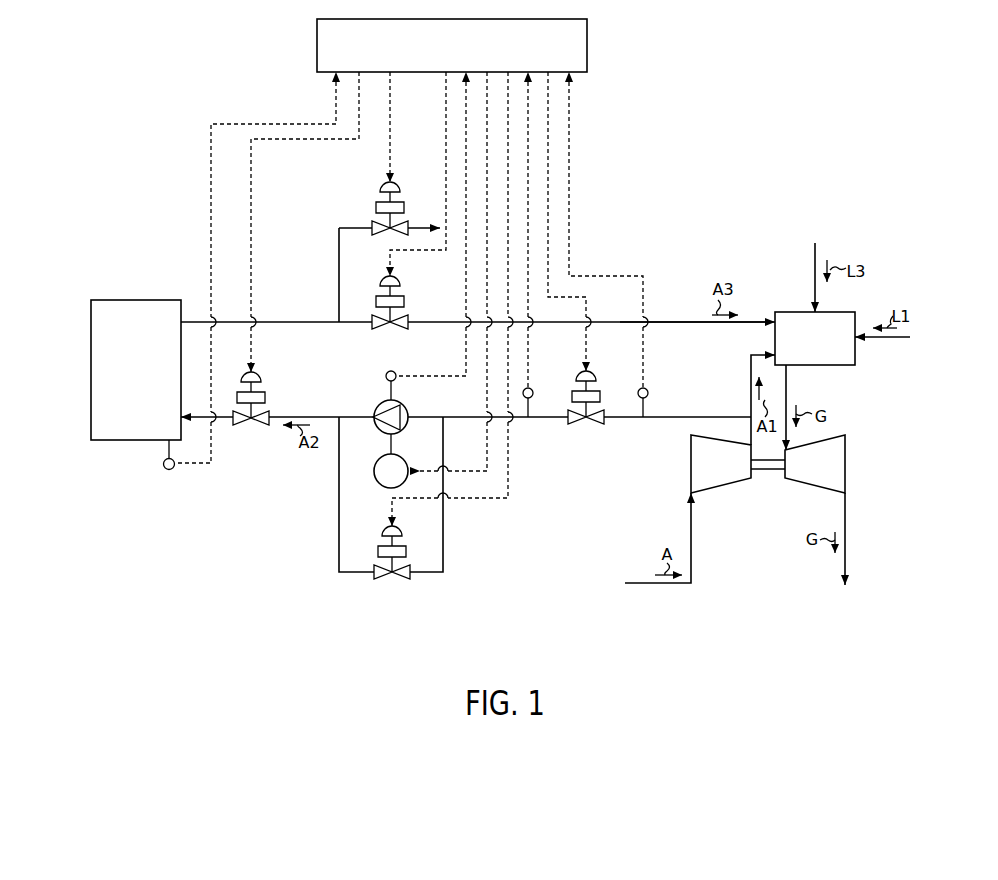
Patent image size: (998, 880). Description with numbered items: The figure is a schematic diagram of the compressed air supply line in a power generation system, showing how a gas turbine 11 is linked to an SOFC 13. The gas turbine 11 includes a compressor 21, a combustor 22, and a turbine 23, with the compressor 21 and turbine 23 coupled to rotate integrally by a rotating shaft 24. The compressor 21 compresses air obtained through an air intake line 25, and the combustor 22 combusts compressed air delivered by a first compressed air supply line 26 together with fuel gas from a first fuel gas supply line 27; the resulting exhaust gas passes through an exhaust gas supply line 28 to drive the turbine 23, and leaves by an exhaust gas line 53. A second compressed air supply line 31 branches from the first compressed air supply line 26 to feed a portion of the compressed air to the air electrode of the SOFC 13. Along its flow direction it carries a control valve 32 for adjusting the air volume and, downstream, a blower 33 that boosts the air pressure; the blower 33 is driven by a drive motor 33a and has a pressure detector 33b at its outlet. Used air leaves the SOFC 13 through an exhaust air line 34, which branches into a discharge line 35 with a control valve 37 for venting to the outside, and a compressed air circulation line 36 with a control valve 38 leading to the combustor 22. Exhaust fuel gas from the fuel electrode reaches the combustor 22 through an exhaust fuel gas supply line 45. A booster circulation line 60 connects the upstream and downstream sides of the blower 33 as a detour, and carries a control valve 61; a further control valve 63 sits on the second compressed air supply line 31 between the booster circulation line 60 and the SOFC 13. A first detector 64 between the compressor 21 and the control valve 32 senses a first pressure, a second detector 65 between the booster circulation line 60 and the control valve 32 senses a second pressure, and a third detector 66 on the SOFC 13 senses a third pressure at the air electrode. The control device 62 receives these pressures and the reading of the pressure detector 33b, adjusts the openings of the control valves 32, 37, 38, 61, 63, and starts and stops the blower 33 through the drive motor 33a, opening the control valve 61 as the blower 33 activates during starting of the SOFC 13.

The gas turbine 11 is at (772, 479).
The SOFC 13 is at (143, 300).
The compressor 21 is at (691, 480).
The combustor 22 is at (831, 312).
The turbine 23 is at (812, 488).
The rotating shaft 24 is at (768, 470).
The air intake line 25 is at (691, 565).
The first compressed air supply line 26 is at (751, 385).
The first fuel gas supply line 27 is at (880, 340).
The exhaust gas supply line 28 is at (786, 387).
The second compressed air supply line 31 is at (616, 420).
The control valve 32 is at (594, 375).
The blower 33 is at (379, 404).
The drive motor 33a is at (399, 455).
The pressure detector 33b is at (396, 372).
The exhaust air line 34 is at (296, 322).
The discharge line 35 is at (350, 228).
The compressed air circulation line 36 is at (668, 322).
The control valve 37 is at (398, 187).
The control valve 38 is at (398, 283).
The exhaust fuel gas supply line 45 is at (815, 262).
The exhaust gas line 53 is at (845, 563).
The booster circulation line 60 is at (339, 518).
The control valve 61 is at (382, 530).
The control device 62 is at (452, 19).
The control valve 63 is at (259, 377).
The first detector 64 is at (650, 390).
The second detector 65 is at (534, 390).
The third detector 66 is at (169, 470).